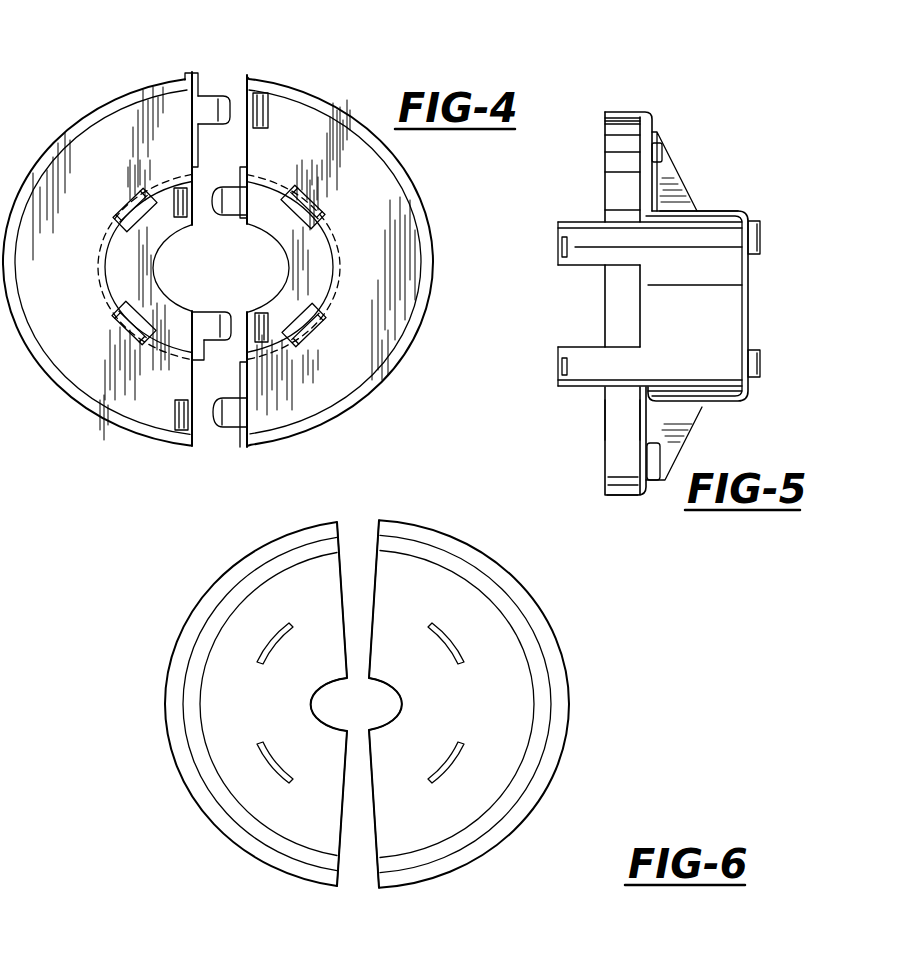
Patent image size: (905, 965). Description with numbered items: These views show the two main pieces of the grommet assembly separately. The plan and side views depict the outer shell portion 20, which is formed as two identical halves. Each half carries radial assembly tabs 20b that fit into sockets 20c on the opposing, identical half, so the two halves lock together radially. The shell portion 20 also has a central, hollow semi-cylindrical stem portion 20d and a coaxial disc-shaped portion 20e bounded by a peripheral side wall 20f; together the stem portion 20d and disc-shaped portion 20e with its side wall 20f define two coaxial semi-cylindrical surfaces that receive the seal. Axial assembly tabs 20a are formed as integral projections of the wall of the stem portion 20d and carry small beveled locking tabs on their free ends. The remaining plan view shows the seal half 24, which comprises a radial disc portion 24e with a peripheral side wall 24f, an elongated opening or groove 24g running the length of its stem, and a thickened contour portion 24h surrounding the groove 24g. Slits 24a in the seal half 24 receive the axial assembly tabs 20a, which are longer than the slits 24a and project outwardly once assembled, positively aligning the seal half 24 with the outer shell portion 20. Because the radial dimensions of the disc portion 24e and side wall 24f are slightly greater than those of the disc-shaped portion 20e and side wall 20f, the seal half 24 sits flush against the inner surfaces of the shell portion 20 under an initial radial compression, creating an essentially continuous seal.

In FIG. 4, the outer shell portion 20 is at (395, 62).
In FIG. 5, the outer shell portion 20 is at (775, 215).
In FIG. 4, the axial assembly tabs 20a is at (310, 310).
In FIG. 5, the axial assembly tabs 20a is at (558, 257).
In FIG. 4, the radial assembly tabs 20b is at (247, 200).
In FIG. 5, the radial assembly tabs 20b is at (760, 374).
In FIG. 4, the sockets 20c is at (268, 117).
In FIG. 5, the sockets 20c is at (762, 253).
In FIG. 5, the semi-cylindrical stem portion 20d is at (722, 211).
In FIG. 5, the disc-shaped portion 20e is at (645, 434).
In FIG. 5, the peripheral side wall 20f is at (627, 497).
In FIG. 6, the seal half 24 is at (572, 882).
In FIG. 6, the slits 24a is at (453, 637).
In FIG. 6, the radial disc portion 24e is at (237, 617).
In FIG. 6, the peripheral side wall 24f is at (566, 682).
In FIG. 6, the groove 24g is at (322, 702).
In FIG. 6, the thickened contour portion 24h is at (340, 643).